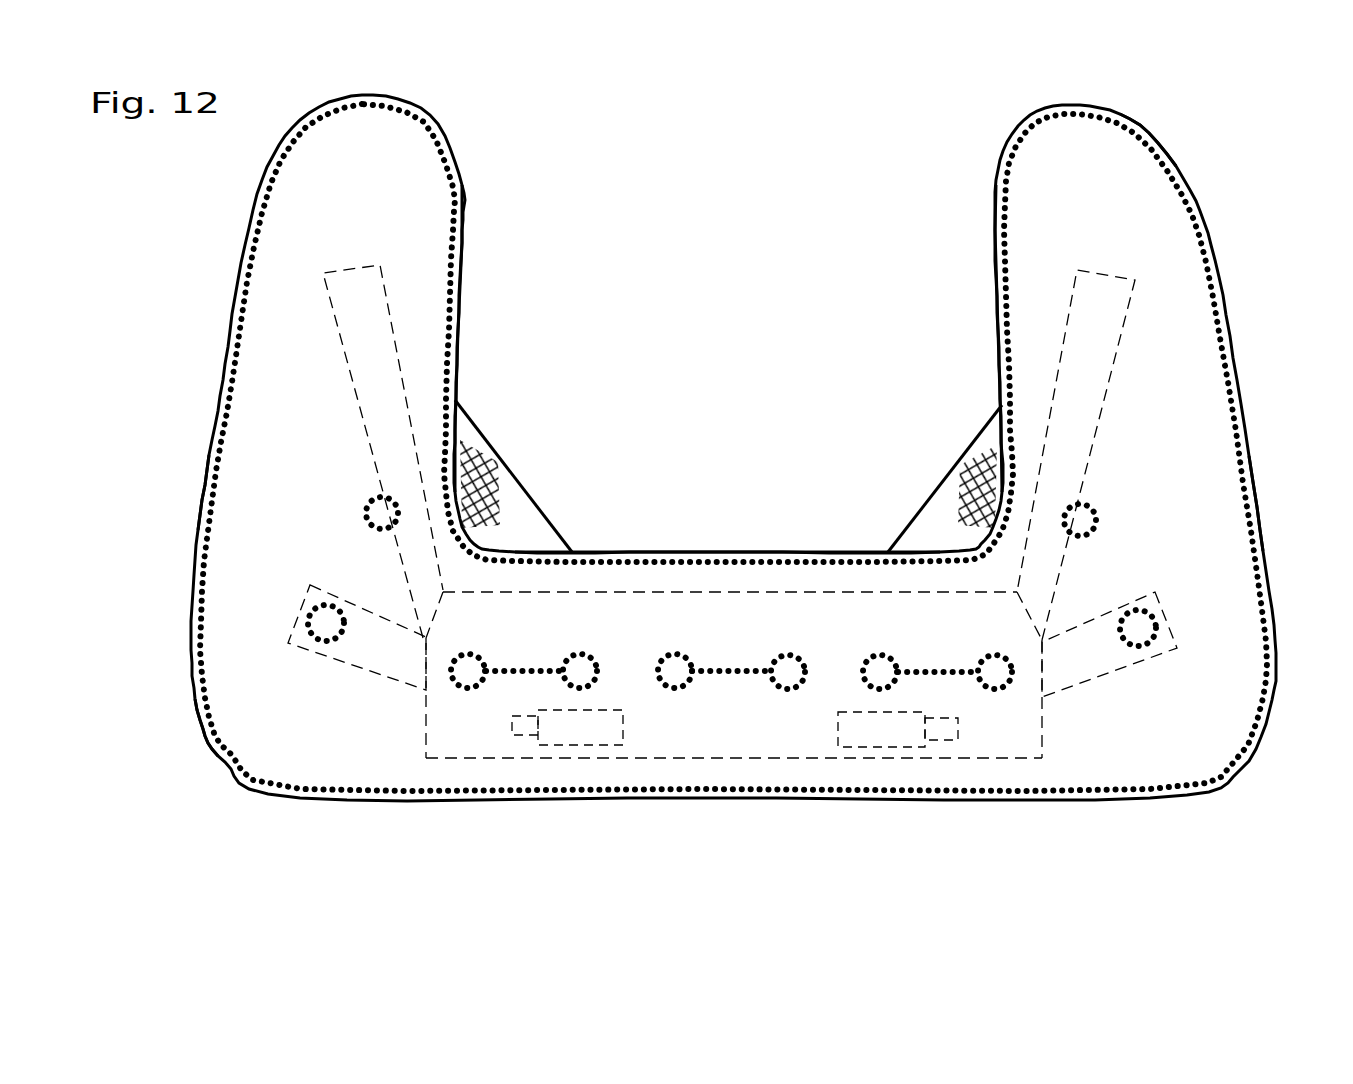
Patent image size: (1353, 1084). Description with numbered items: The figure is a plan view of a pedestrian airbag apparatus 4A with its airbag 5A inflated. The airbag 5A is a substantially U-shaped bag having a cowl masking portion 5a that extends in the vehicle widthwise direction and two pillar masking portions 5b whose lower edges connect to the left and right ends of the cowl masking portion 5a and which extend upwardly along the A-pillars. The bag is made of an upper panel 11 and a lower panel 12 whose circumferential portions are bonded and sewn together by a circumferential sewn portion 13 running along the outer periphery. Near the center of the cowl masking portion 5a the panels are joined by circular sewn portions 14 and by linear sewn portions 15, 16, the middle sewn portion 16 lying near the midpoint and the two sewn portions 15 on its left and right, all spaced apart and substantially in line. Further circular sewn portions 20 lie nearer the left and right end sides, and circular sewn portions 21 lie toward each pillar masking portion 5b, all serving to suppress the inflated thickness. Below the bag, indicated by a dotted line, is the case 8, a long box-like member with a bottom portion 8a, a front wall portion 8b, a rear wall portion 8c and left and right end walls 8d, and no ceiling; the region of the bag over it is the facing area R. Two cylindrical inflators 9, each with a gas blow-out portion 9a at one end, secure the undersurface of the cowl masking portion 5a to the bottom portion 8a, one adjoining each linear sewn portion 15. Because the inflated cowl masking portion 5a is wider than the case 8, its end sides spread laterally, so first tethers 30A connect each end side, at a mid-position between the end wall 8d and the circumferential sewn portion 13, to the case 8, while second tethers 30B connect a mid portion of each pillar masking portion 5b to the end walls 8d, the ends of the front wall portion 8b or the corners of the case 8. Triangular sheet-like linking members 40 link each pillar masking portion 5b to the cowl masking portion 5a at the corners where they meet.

The pedestrian airbag apparatus 4A is at (272, 825).
The airbag 5A is at (1195, 155).
The cowl masking portion 5a is at (732, 551).
The pillar masking portion 5b is at (462, 184).
The case 8 is at (766, 684).
The bottom portion 8a is at (775, 758).
The front wall portion 8b is at (650, 590).
The rear wall portion 8c is at (560, 760).
The end wall 8d is at (410, 760).
The inflator 9 is at (623, 740).
The gas blow-out portion 9a is at (512, 727).
The upper panel 11 is at (237, 523).
The lower panel 12 is at (232, 553).
The circumferential sewn portion 13 is at (222, 757).
The circular sewn portion 14 is at (466, 655).
The linear sewn portion 15 is at (522, 668).
The linear sewn portion 16 is at (736, 668).
The circular sewn portion 20 is at (310, 617).
The circular sewn portion 21 is at (366, 512).
The first tether 30A is at (353, 668).
The second tether 30B is at (340, 347).
The linking member 40 is at (504, 472).
The facing area R is at (815, 620).